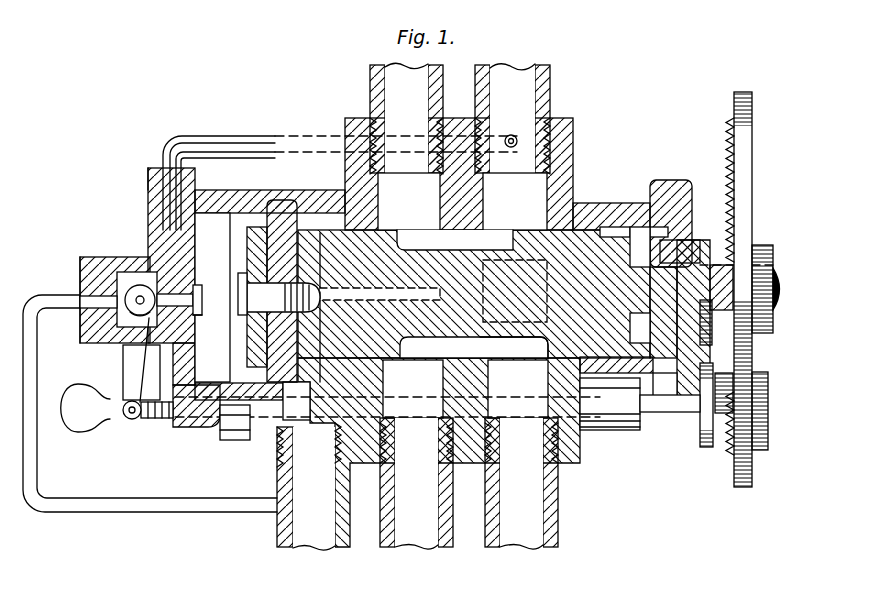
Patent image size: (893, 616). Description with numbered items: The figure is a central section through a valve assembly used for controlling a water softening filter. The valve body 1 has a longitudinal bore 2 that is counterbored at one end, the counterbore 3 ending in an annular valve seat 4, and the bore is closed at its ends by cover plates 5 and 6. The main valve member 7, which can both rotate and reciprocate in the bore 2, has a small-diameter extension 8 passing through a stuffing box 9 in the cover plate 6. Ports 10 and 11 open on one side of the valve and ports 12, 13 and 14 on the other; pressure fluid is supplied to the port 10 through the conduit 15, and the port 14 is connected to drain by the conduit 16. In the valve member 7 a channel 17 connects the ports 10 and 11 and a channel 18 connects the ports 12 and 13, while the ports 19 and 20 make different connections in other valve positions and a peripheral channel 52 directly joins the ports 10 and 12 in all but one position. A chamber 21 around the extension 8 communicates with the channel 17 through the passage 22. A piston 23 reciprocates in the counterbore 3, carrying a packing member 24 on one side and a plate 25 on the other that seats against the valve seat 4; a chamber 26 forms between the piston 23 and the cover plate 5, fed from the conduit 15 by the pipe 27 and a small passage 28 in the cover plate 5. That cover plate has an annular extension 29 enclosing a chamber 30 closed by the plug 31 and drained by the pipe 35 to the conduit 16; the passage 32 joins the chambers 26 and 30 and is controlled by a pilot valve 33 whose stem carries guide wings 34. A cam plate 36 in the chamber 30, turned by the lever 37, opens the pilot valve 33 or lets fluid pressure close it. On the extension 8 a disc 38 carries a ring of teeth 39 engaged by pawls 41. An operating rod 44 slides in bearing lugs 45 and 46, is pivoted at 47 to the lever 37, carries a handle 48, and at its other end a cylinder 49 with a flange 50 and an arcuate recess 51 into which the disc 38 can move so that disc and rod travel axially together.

The valve body 1 is at (583, 172).
The longitudinal bore 2 is at (577, 206).
The counterbore 3 is at (217, 212).
The annular valve seat 4 is at (300, 370).
The cover plate 5 is at (148, 198).
The cover plate 6 is at (692, 200).
The main valve member 7 is at (580, 263).
The extension 8 is at (710, 267).
The stuffing box 9 is at (683, 182).
The port 10 is at (515, 201).
The port 11 is at (406, 145).
The port 12 is at (521, 472).
The port 13 is at (416, 455).
The port 14 is at (387, 408).
The conduit 15 is at (553, 84).
The drain conduit 16 is at (277, 531).
The channel 17 is at (488, 237).
The channel 18 is at (512, 356).
The port 19 is at (474, 348).
The port 20 is at (505, 348).
The chamber 21 is at (645, 333).
The passage 22 is at (593, 203).
The piston 23 is at (270, 205).
The packing member 24 is at (235, 360).
The plate 25 is at (312, 212).
The chamber 26 is at (212, 297).
The pipe 27 is at (242, 138).
The passage 28 is at (150, 190).
The annular extension 29 is at (103, 253).
The chamber 30 is at (134, 264).
The plug 31 is at (80, 290).
The passage 32 is at (199, 285).
The pilot valve 33 is at (197, 300).
The guide wings 34 is at (197, 327).
The pipe 35 is at (137, 510).
The cam plate 36 is at (145, 320).
The lever 37 is at (123, 381).
The disc 38 is at (745, 210).
The ring of teeth 39 is at (725, 148).
The pawls 41 is at (715, 307).
The operating rod 44 is at (652, 412).
The bearing lug 45 is at (618, 430).
The bearing lug 46 is at (222, 433).
The pivotal connection 47 is at (135, 421).
The handle 48 is at (80, 434).
The cylinder 49 is at (768, 433).
The flange 50 is at (706, 448).
The arcuate recess 51 is at (718, 370).
The peripheral channel 52 is at (455, 241).